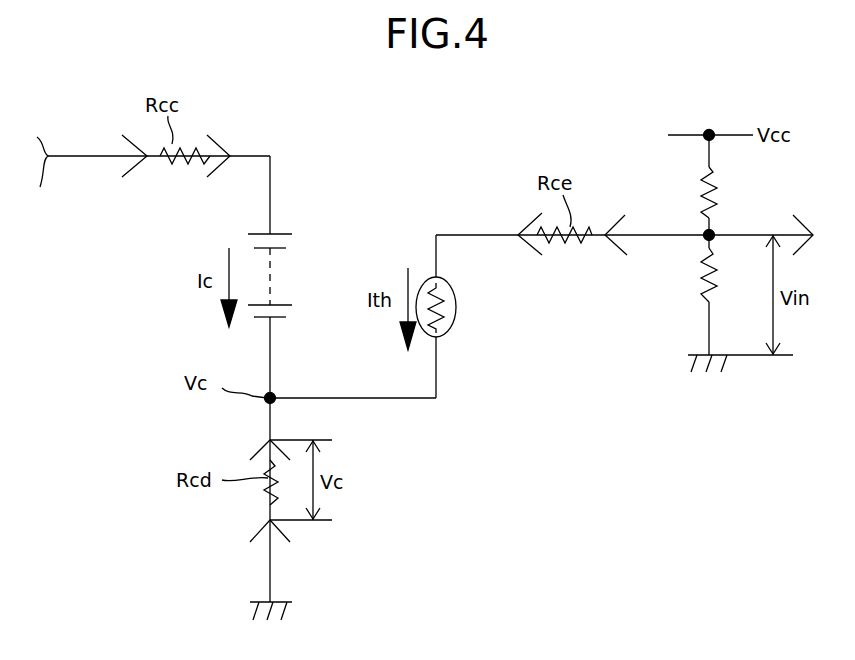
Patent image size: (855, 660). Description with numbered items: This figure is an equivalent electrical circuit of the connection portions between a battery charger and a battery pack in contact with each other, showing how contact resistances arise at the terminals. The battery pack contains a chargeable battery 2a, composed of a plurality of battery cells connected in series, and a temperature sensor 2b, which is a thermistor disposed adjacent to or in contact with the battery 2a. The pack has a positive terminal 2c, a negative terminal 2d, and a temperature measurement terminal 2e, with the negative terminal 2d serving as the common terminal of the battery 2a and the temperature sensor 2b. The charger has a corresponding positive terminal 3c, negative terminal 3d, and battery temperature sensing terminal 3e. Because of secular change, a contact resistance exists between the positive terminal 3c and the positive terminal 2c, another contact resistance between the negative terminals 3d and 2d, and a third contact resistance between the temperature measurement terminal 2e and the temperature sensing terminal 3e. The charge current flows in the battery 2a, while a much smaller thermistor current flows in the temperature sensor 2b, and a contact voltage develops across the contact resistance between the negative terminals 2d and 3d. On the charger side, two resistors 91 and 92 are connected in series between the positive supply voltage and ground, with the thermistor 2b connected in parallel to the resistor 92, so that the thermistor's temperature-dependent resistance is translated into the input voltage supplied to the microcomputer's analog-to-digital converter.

The chargeable battery 2a is at (283, 267).
The temperature sensor 2b is at (456, 325).
The positive terminal 2c is at (215, 142).
The negative terminal 2d is at (263, 443).
The temperature measurement terminal 2e is at (530, 222).
The positive terminal 3c is at (136, 164).
The negative terminal 3d is at (262, 527).
The battery temperature sensing terminal 3e is at (613, 222).
The resistor 91 is at (703, 194).
The resistor 92 is at (703, 277).